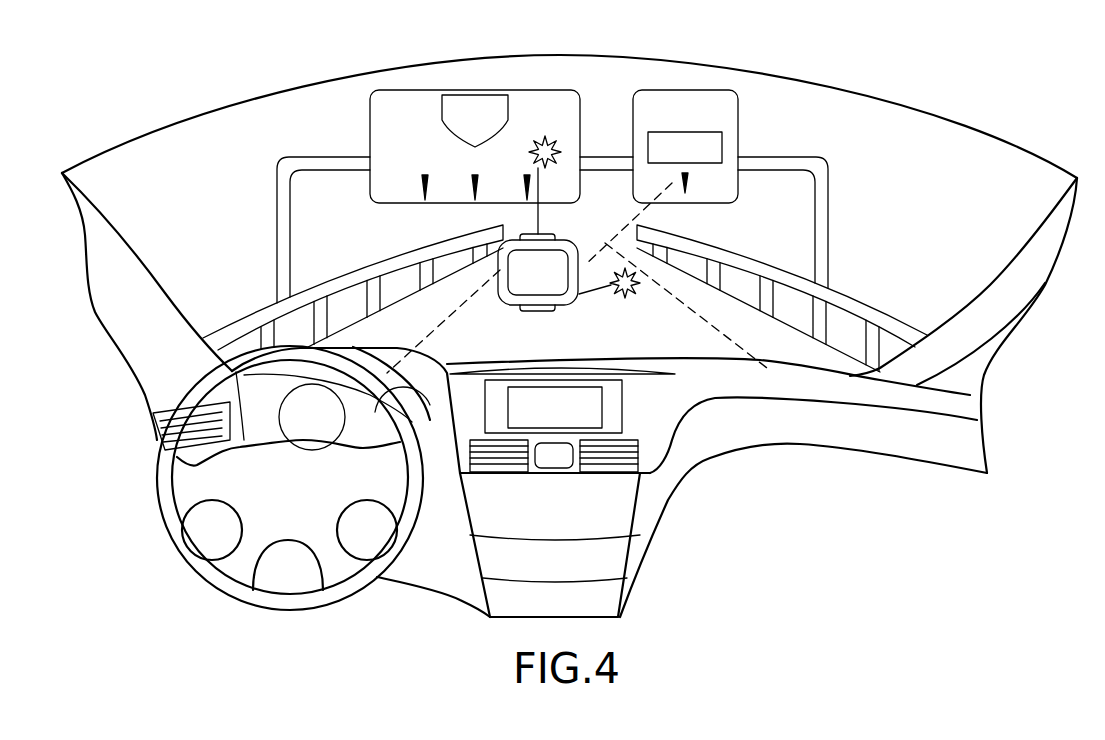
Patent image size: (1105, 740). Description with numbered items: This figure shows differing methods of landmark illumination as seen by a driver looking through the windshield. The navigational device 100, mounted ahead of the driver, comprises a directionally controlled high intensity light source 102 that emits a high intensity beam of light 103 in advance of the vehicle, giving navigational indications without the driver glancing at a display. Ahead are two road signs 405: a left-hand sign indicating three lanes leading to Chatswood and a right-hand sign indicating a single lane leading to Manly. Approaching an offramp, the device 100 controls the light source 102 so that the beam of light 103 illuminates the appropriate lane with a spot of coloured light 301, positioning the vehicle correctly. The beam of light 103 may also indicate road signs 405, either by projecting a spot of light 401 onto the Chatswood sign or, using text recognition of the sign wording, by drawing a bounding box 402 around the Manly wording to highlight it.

The navigational device 100 is at (488, 279).
The directionally controlled high intensity light source 102 is at (535, 310).
The high intensity beam of light 103 is at (537, 210).
The spot of coloured light 301 is at (632, 295).
The spot of light 401 is at (552, 138).
The bounding box 402 is at (723, 146).
The road signs 405 is at (532, 90).